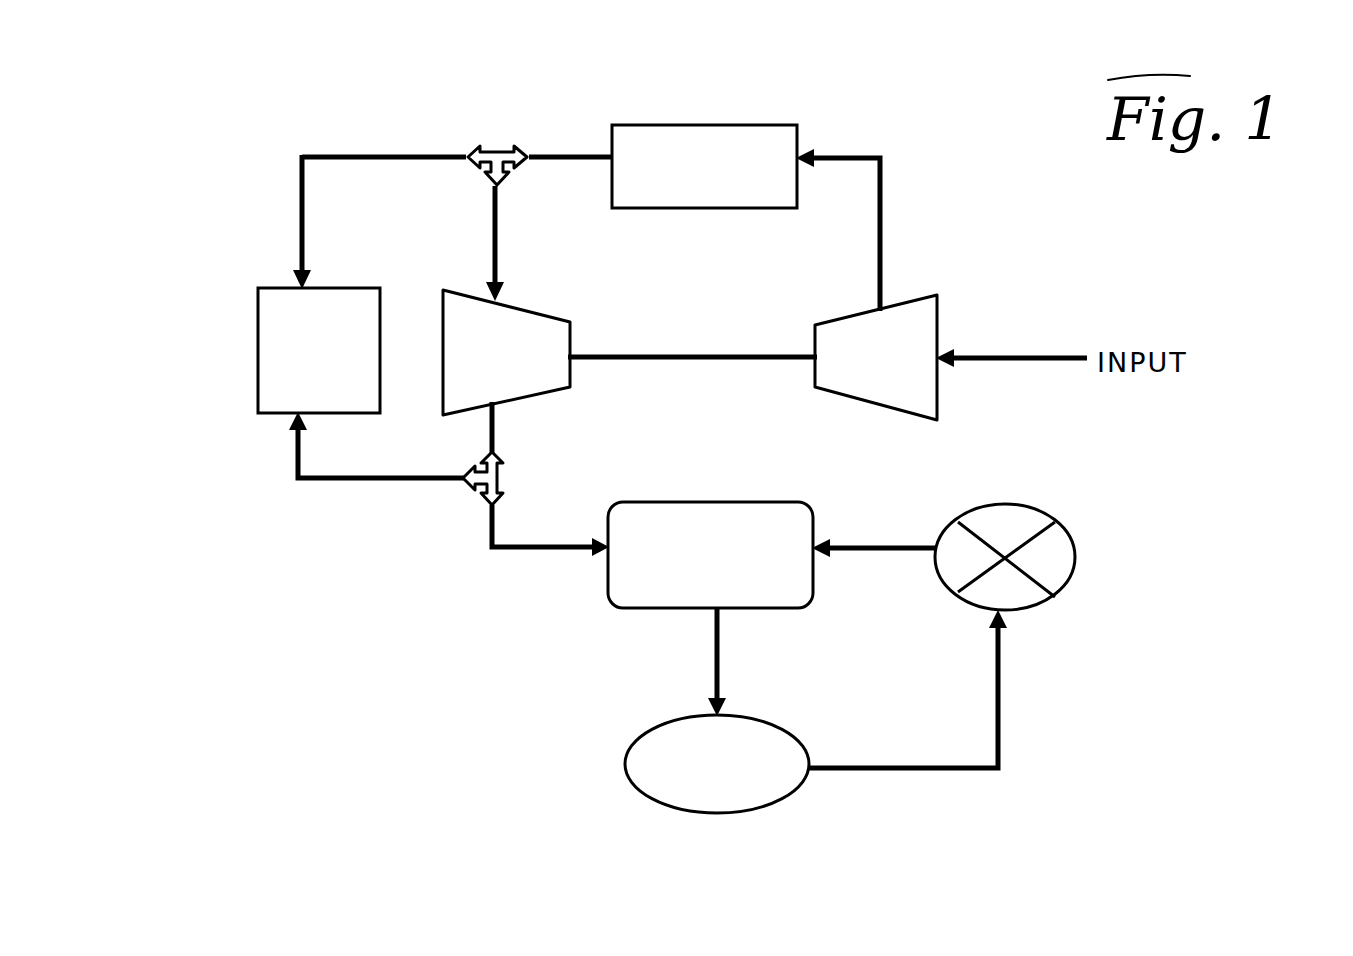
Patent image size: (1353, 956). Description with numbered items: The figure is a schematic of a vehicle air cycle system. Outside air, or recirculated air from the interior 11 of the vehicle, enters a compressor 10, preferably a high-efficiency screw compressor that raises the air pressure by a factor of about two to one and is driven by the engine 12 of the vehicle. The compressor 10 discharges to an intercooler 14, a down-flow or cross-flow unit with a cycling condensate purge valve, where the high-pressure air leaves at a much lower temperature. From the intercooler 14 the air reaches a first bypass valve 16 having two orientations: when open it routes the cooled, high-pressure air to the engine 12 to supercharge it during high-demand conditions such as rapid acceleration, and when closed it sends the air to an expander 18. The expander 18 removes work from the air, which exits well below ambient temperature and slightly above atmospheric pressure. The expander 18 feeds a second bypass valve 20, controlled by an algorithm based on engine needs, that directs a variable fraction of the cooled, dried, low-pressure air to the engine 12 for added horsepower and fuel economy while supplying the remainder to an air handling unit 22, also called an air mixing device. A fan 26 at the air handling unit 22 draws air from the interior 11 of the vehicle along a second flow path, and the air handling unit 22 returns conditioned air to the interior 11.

The compressor 10 is at (930, 300).
The interior of the vehicle 11 is at (672, 795).
The engine 12 is at (262, 405).
The intercooler 14 is at (780, 132).
The first bypass valve 16 is at (497, 152).
The expander 18 is at (548, 322).
The second bypass valve 20 is at (483, 502).
The air handling unit 22 is at (628, 593).
The fan 26 is at (1065, 537).